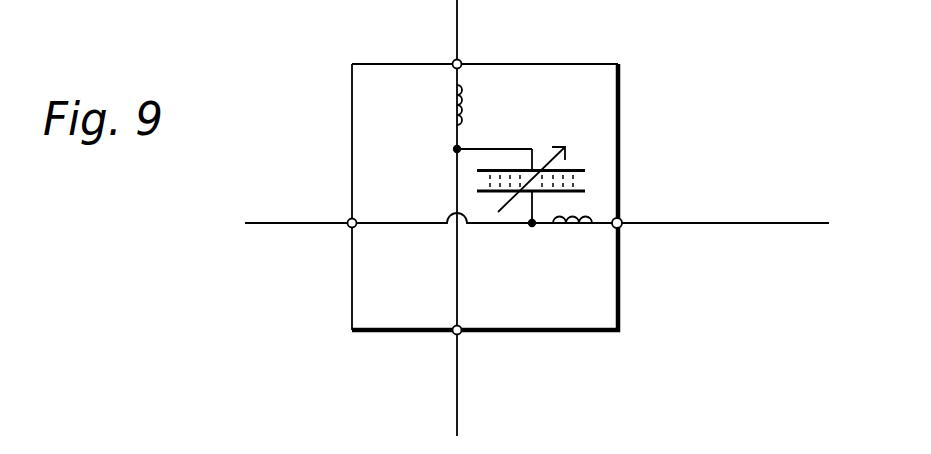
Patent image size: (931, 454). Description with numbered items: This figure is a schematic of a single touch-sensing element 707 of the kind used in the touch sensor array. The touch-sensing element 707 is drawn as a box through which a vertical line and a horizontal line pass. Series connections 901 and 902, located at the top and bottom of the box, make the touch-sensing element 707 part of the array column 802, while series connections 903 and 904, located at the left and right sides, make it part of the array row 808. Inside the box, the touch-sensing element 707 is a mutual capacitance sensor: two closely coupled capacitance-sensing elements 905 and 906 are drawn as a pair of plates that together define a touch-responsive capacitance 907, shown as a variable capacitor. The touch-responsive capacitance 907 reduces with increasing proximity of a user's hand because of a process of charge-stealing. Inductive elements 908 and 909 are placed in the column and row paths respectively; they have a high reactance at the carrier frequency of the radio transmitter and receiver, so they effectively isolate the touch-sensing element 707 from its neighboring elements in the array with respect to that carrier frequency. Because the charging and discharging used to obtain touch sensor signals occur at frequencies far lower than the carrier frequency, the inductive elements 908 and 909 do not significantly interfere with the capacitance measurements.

The touch-sensing element 707 is at (590, 76).
The array column 802 is at (457, 400).
The array row 808 is at (268, 222).
The series connection 901 is at (452, 61).
The series connection 902 is at (452, 336).
The series connection 903 is at (347, 228).
The series connection 904 is at (621, 228).
The capacitance-sensing element 905 is at (531, 161).
The capacitance-sensing element 906 is at (585, 192).
The touch-responsive capacitance 907 is at (490, 184).
The inductive element 908 is at (463, 106).
The inductive element 909 is at (570, 229).